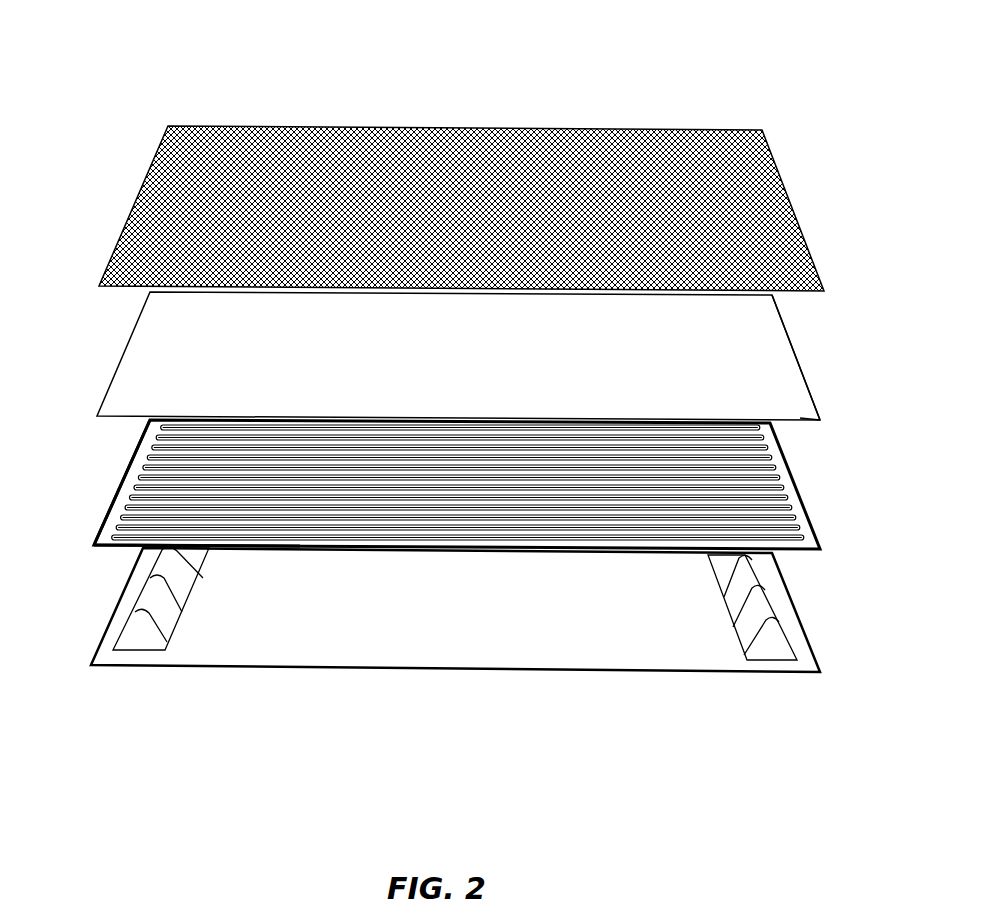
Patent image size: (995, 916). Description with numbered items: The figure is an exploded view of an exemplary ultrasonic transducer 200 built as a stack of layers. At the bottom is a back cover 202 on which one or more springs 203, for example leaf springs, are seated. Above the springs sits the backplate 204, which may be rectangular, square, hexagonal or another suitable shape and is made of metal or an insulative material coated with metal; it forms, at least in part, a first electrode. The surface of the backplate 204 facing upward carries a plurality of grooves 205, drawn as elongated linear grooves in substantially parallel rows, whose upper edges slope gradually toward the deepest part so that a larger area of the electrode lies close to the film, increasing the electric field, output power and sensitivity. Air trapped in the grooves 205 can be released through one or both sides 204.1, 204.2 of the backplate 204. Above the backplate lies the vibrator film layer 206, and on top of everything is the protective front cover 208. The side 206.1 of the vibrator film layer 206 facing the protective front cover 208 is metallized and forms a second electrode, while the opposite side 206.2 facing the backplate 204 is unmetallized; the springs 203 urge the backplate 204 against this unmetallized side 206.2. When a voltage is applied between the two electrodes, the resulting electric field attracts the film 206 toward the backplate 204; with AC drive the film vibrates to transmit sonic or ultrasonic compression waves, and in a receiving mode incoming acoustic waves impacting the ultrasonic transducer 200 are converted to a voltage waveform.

The ultrasonic transducer 200 is at (183, 40).
The back cover 202 is at (100, 640).
The springs 203 is at (195, 634).
The backplate 204 is at (458, 484).
The side of the backplate 204.1 is at (126, 510).
The side of the backplate 204.2 is at (115, 554).
The grooves 205 is at (792, 486).
The vibrator film layer 206 is at (127, 340).
The metallized side of the vibrator film layer 206.1 is at (774, 350).
The unmetallized side of the vibrator film layer 206.2 is at (798, 442).
The protective front cover 208 is at (142, 188).